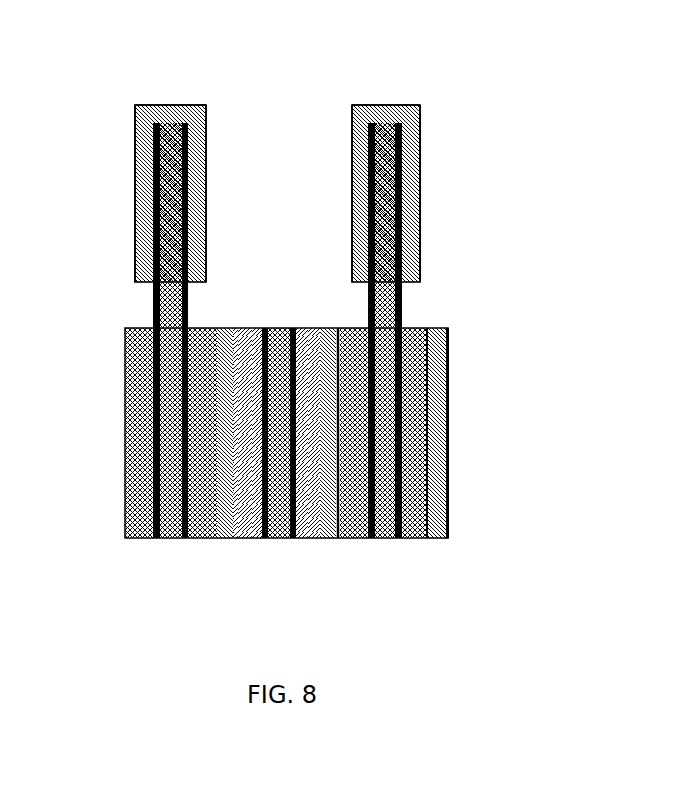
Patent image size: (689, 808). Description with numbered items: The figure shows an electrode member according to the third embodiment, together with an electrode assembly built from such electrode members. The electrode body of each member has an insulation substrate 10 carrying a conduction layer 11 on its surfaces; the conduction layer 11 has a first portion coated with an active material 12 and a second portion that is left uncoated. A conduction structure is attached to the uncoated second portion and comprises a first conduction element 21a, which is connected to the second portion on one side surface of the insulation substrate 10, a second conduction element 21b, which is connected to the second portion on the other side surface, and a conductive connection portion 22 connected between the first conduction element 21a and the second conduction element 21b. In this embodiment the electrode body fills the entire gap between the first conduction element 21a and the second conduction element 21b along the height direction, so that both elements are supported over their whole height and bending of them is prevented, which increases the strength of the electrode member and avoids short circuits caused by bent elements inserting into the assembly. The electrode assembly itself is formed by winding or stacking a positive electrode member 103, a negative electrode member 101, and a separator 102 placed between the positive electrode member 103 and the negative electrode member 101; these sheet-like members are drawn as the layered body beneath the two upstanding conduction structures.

The insulation substrate 10 is at (204, 200).
The conduction layer 11 is at (137, 190).
The active material 12 is at (125, 340).
The first conduction element 21a is at (137, 152).
The second conduction element 21b is at (207, 183).
The conductive connection portion 22 is at (174, 100).
The negative electrode member 101 is at (320, 540).
The separator 102 is at (217, 539).
The positive electrode member 103 is at (128, 538).